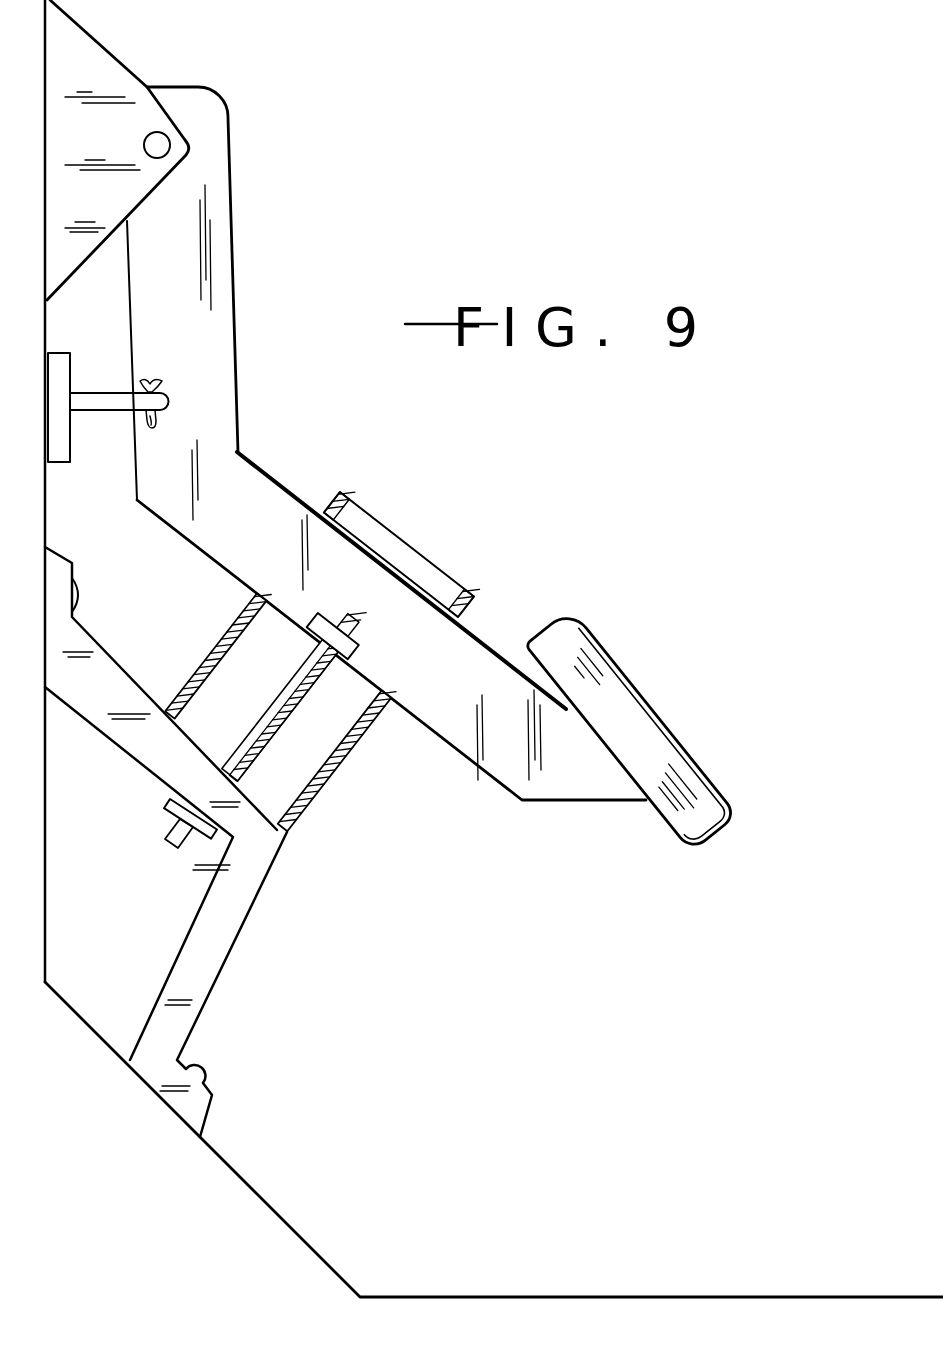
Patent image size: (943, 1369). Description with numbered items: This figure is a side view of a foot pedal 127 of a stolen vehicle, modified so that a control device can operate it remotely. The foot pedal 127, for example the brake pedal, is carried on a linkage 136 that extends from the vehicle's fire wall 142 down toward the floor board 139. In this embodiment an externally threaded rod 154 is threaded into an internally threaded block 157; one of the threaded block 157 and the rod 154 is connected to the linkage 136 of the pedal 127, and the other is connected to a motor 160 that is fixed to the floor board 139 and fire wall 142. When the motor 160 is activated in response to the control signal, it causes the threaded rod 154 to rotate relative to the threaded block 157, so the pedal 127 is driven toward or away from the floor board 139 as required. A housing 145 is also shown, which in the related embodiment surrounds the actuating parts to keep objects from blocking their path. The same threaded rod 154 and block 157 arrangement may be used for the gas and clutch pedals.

The foot pedal 127 is at (722, 845).
The linkage 136 is at (288, 462).
The floor board 139 is at (287, 1216).
The fire wall 142 is at (45, 492).
The housing 145 is at (213, 652).
The externally threaded rod 154 is at (315, 797).
The internally threaded block 157 is at (363, 650).
The motor 160 is at (170, 810).